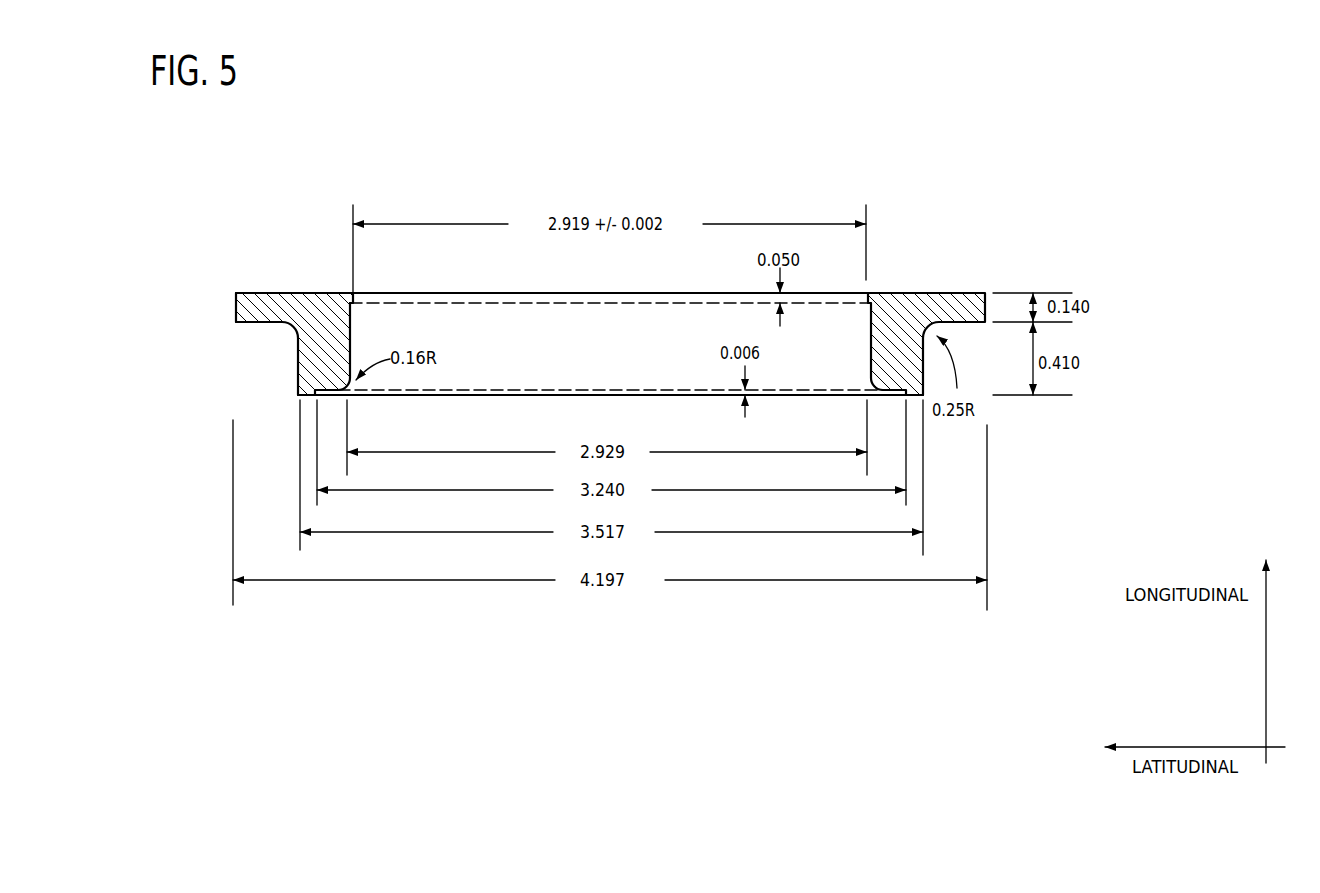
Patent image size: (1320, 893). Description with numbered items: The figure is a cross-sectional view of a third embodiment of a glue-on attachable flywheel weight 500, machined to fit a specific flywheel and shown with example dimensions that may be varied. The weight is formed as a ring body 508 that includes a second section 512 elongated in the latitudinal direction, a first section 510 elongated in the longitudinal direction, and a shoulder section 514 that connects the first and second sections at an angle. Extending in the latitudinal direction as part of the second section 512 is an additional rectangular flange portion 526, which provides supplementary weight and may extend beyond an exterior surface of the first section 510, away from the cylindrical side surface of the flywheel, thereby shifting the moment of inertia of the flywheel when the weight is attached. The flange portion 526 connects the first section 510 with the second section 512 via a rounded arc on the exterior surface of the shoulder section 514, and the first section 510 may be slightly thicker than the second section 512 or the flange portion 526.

The glue-on attachable flywheel weight 500 is at (904, 76).
The ring body 508 is at (462, 292).
The first section 510 is at (298, 366).
The second section 512 is at (316, 293).
The shoulder section 514 is at (353, 292).
The flange portion 526 is at (236, 303).